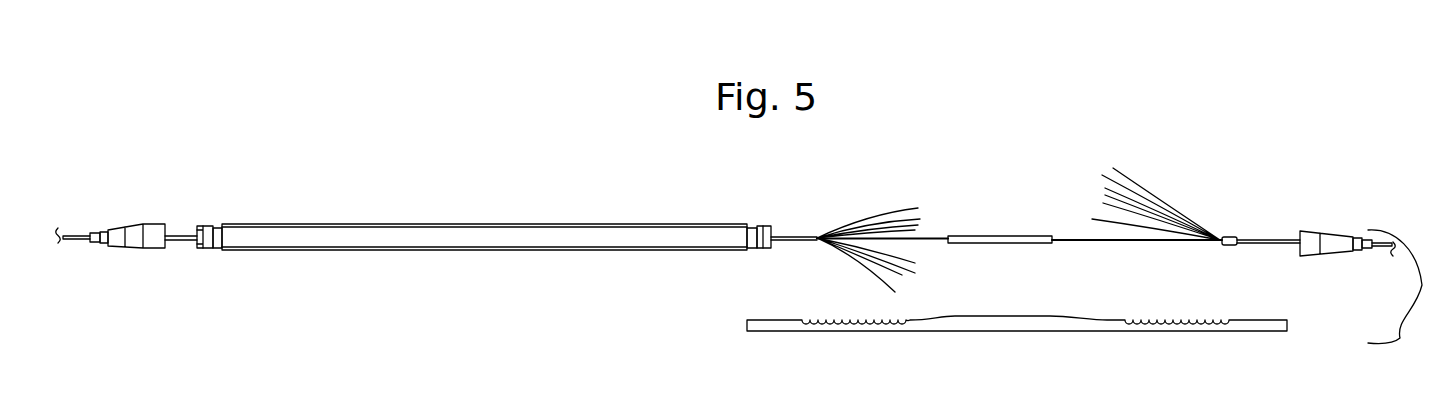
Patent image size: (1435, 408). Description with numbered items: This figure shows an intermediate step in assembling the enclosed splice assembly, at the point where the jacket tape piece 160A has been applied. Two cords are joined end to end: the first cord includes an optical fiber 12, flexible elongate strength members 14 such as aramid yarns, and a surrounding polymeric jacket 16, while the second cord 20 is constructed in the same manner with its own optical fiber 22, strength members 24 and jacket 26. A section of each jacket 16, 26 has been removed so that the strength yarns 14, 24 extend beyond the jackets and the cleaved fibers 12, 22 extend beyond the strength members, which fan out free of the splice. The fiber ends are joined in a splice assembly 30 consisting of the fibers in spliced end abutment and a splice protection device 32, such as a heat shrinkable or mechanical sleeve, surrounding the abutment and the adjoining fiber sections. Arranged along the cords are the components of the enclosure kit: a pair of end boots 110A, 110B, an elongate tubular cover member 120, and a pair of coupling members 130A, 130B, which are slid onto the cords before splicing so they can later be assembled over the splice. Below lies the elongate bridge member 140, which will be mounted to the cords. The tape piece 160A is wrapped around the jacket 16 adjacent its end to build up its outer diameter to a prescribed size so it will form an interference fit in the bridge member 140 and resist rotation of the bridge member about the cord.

The optical fiber 12 is at (1152, 242).
The strength members 14 is at (1163, 213).
The jacket 16 is at (1255, 240).
The second cord 20 is at (174, 236).
The optical fiber 22 is at (930, 236).
The strength members 24 is at (886, 228).
The jacket 26 is at (793, 236).
The splice assembly 30 is at (1037, 207).
The splice protection device 32 is at (1018, 237).
The end boot 110A is at (1307, 245).
The end boot 110B is at (138, 225).
The tubular cover member 120 is at (322, 238).
The coupling member 130A is at (763, 247).
The coupling member 130B is at (205, 238).
The bridge member 140 is at (1007, 313).
The jacket tape piece 160A is at (1228, 237).